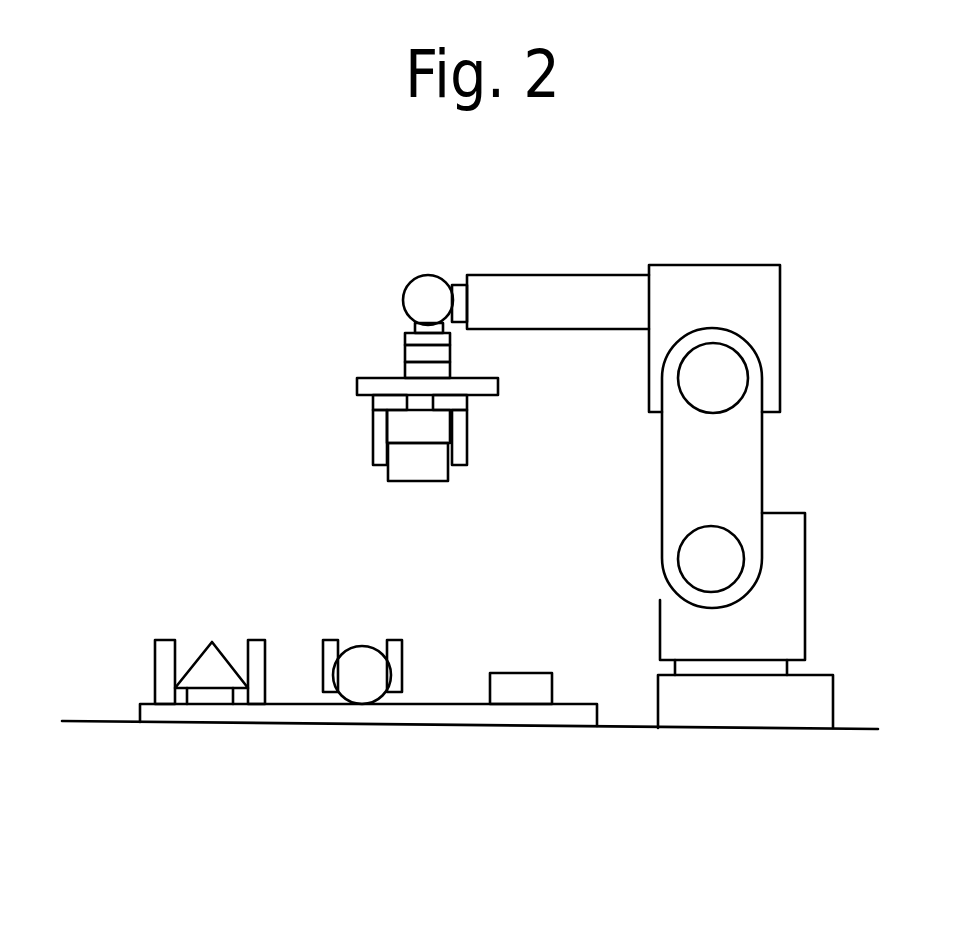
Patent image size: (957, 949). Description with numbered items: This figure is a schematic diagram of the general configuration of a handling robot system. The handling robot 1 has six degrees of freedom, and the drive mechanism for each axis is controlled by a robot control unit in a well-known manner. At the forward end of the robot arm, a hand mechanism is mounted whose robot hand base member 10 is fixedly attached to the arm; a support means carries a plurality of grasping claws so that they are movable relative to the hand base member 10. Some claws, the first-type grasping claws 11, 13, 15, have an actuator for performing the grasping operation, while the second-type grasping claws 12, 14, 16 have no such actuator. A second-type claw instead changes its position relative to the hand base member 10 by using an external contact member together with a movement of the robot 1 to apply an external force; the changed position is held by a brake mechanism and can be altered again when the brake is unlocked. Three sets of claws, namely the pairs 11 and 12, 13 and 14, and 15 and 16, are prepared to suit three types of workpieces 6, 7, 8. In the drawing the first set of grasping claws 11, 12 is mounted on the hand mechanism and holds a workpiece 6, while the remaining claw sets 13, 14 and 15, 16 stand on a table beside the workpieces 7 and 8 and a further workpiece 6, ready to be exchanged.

The handling robot 1 is at (776, 466).
The workpiece 6 is at (425, 468).
The workpiece 7 is at (205, 682).
The workpiece 8 is at (358, 695).
The robot hand base member 10 is at (390, 383).
The first-type grasping claw 11 is at (378, 442).
The second-type grasping claw 12 is at (460, 438).
The first-type grasping claw 13 is at (165, 657).
The second-type grasping claw 14 is at (257, 656).
The first-type grasping claw 15 is at (322, 660).
The second-type grasping claw 16 is at (398, 657).